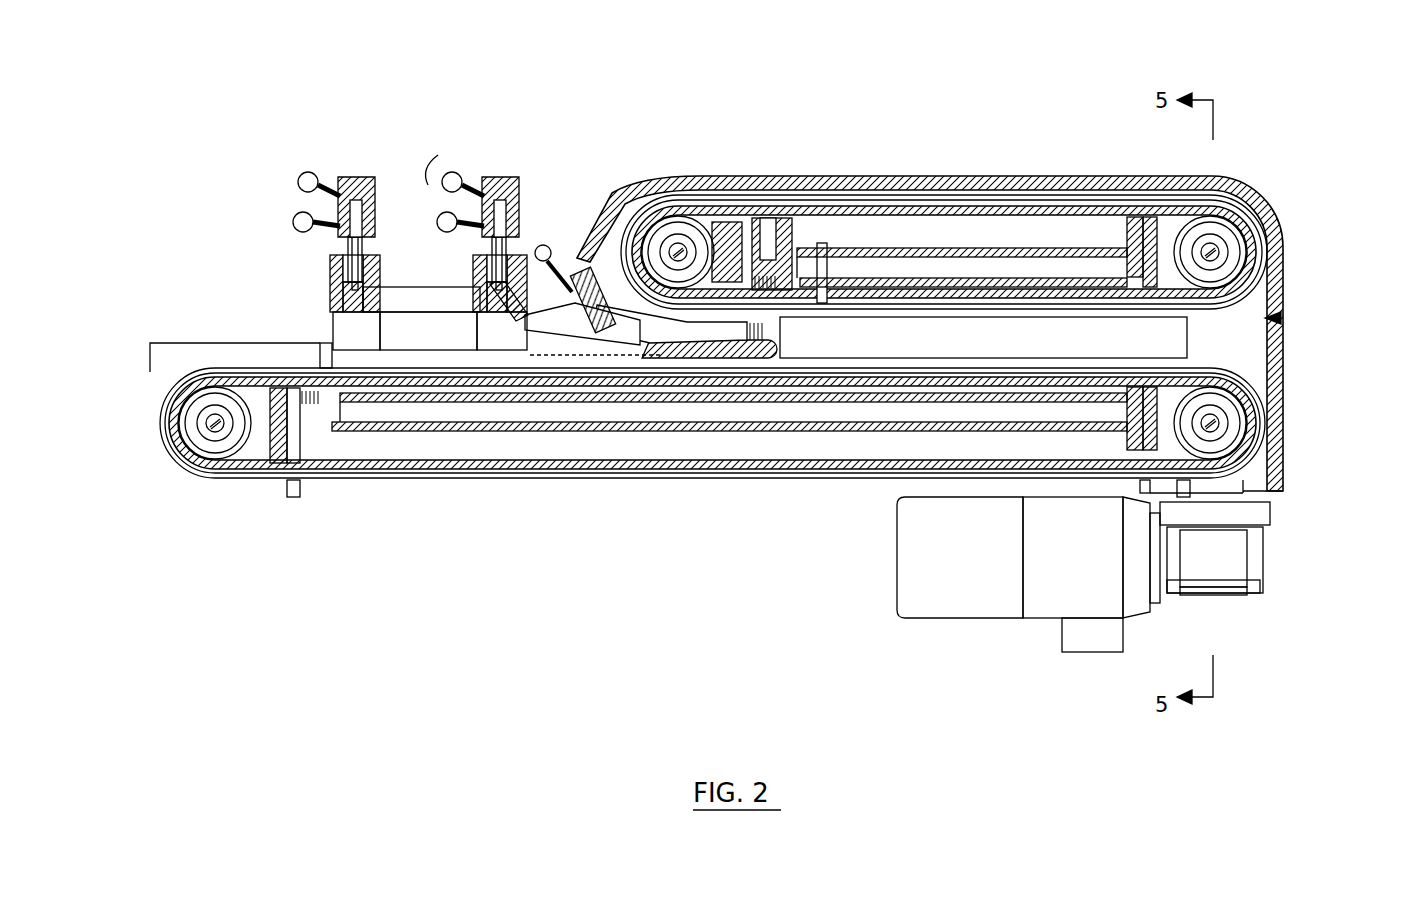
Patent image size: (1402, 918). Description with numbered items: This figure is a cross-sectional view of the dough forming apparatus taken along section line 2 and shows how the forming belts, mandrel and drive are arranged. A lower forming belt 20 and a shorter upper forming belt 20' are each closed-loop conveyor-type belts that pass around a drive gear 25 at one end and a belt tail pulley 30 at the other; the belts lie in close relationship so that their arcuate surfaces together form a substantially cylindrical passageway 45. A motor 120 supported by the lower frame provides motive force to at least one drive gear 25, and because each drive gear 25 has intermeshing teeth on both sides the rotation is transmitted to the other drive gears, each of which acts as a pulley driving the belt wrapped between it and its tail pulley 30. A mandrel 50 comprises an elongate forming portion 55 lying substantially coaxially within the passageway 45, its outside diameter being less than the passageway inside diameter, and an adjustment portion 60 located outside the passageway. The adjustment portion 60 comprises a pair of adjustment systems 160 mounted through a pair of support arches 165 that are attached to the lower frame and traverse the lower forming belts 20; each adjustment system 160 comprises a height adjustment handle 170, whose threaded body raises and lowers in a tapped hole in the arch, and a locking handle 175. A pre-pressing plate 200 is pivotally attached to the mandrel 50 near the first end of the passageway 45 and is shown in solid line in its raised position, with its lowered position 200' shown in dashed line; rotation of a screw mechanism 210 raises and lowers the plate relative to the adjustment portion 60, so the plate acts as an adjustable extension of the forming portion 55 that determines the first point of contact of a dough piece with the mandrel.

The section line 2 is at (1280, 318).
The lower forming belt 20 is at (706, 455).
The upper forming belt 20' is at (957, 328).
The drive gear 25 is at (1235, 255).
The belt tail pulley 30 is at (683, 245).
The substantially cylindrical passageway 45 is at (950, 318).
The mandrel 50 is at (414, 178).
The elongate forming portion 55 is at (827, 335).
The adjustment portion 60 is at (435, 300).
The motor 120 is at (967, 602).
The adjustment system 160 is at (350, 165).
The support arch 165 is at (345, 330).
The height adjustment handle 170 is at (342, 235).
The locking handle 175 is at (345, 182).
The pre-pressing plate 200 is at (565, 398).
The pre-pressing plate lowered position 200' is at (595, 447).
The screw mechanism 210 is at (600, 335).